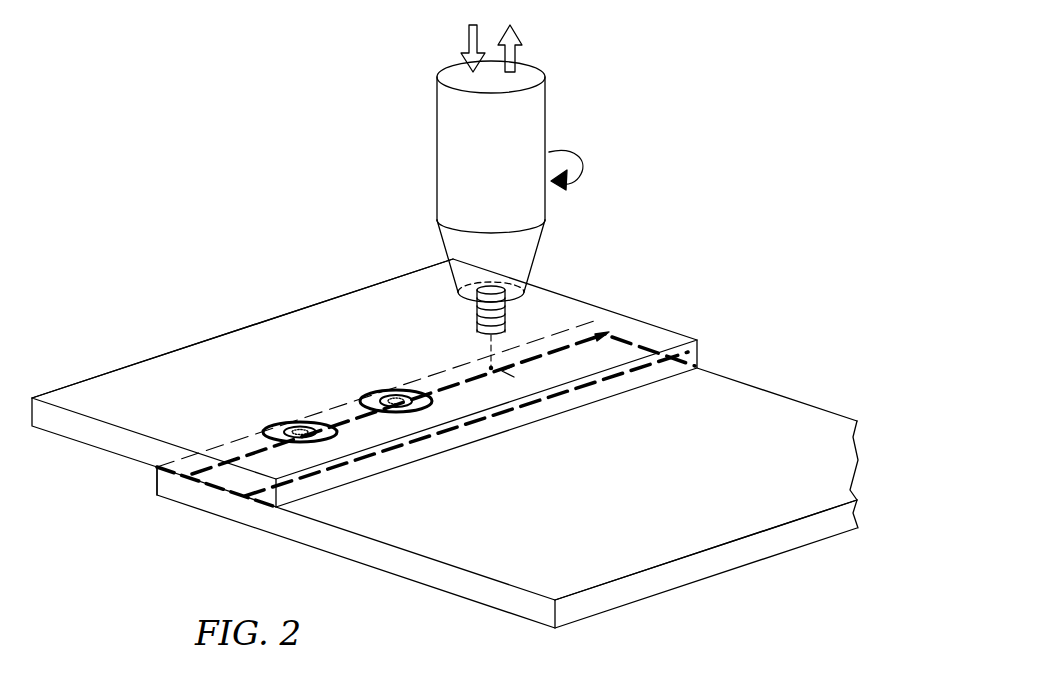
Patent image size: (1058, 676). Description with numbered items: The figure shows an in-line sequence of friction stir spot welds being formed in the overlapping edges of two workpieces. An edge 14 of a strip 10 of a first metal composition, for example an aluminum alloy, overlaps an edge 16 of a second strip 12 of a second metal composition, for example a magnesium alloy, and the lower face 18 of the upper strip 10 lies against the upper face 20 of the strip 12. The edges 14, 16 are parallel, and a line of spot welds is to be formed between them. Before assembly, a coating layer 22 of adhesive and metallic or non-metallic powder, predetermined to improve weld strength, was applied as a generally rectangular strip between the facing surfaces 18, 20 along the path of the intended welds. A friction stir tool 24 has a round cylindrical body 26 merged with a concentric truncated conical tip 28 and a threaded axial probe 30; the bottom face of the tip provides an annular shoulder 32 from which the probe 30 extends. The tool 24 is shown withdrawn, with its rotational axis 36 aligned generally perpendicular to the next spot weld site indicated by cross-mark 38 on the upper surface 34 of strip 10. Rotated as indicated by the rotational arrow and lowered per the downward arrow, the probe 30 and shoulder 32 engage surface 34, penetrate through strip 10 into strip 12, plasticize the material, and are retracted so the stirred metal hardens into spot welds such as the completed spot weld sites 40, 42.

The strip 10 is at (199, 400).
The second strip 12 is at (769, 491).
The edge 14 is at (687, 353).
The edge 16 is at (150, 483).
The lower face 18 is at (107, 456).
The upper face 20 is at (737, 412).
The coating layer 22 is at (228, 492).
The friction stir tool 24 is at (513, 197).
The round cylindrical body 26 is at (466, 148).
The truncated conical tip 28 is at (525, 262).
The threaded axial probe 30 is at (508, 316).
The annular shoulder 32 is at (455, 307).
The upper surface 34 is at (300, 328).
The rotational axis 36 is at (507, 337).
The cross-mark 38 is at (586, 326).
The spot weld site 40 is at (297, 424).
The spot weld site 42 is at (394, 394).